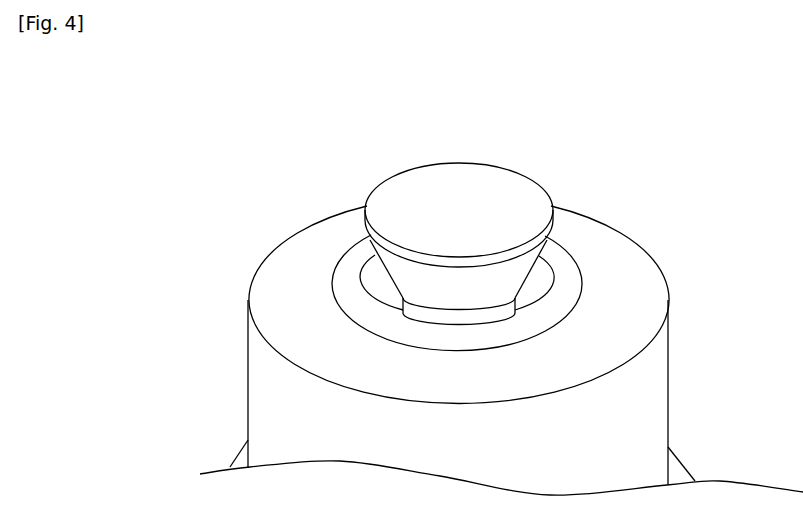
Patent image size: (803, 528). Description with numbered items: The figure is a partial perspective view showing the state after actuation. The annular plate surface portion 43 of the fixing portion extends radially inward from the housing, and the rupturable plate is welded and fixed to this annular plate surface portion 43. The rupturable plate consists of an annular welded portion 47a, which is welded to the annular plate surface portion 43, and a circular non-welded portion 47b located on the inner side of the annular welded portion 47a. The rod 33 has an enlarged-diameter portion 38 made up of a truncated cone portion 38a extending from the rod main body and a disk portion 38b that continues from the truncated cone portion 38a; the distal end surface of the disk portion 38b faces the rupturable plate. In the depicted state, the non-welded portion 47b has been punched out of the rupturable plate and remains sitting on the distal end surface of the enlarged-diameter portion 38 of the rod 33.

The annular plate surface portion 43 is at (285, 267).
The non-welded portion 47b is at (477, 182).
The annular welded portion 47a is at (548, 308).
The enlarged-diameter portion 38 is at (568, 228).
The disk portion 38b is at (547, 243).
The truncated cone portion 38a is at (507, 282).
The rod 33 is at (497, 311).